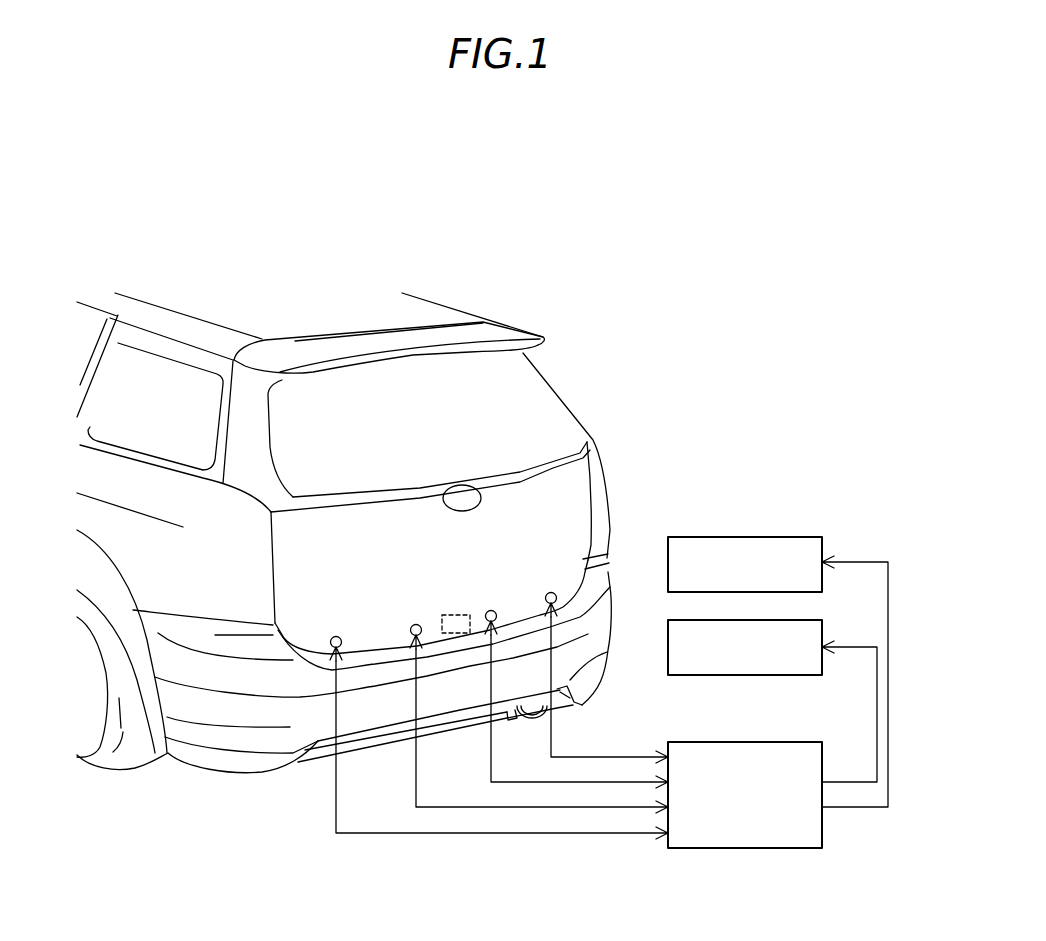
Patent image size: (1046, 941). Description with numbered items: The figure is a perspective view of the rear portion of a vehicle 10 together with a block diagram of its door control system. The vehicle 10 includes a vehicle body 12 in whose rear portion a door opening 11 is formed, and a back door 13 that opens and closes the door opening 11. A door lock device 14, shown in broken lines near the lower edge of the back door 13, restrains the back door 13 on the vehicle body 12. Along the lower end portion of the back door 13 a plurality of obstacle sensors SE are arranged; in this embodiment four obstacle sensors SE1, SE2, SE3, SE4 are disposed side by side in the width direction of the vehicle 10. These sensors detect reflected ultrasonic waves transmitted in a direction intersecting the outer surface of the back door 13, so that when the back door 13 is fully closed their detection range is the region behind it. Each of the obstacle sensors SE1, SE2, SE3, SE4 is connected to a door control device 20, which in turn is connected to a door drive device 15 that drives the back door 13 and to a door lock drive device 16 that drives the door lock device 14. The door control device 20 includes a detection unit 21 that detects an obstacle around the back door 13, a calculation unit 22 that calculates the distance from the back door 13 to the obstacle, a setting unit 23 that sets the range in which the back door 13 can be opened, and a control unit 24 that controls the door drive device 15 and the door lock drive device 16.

The vehicle 10 is at (558, 292).
The door opening 11 is at (276, 548).
The vehicle body 12 is at (207, 337).
The back door 13 is at (578, 482).
The door lock device 14 is at (463, 612).
The door drive device 15 is at (737, 536).
The door lock drive device 16 is at (737, 619).
The door control device 20 is at (793, 717).
The detection unit 21 is at (793, 717).
The calculation unit 22 is at (793, 717).
The setting unit 23 is at (793, 717).
The control unit 24 is at (688, 848).
The obstacle sensor SE is at (579, 617).
The obstacle sensor SE1 is at (335, 636).
The obstacle sensor SE2 is at (415, 624).
The obstacle sensor SE3 is at (490, 610).
The obstacle sensor SE4 is at (548, 592).